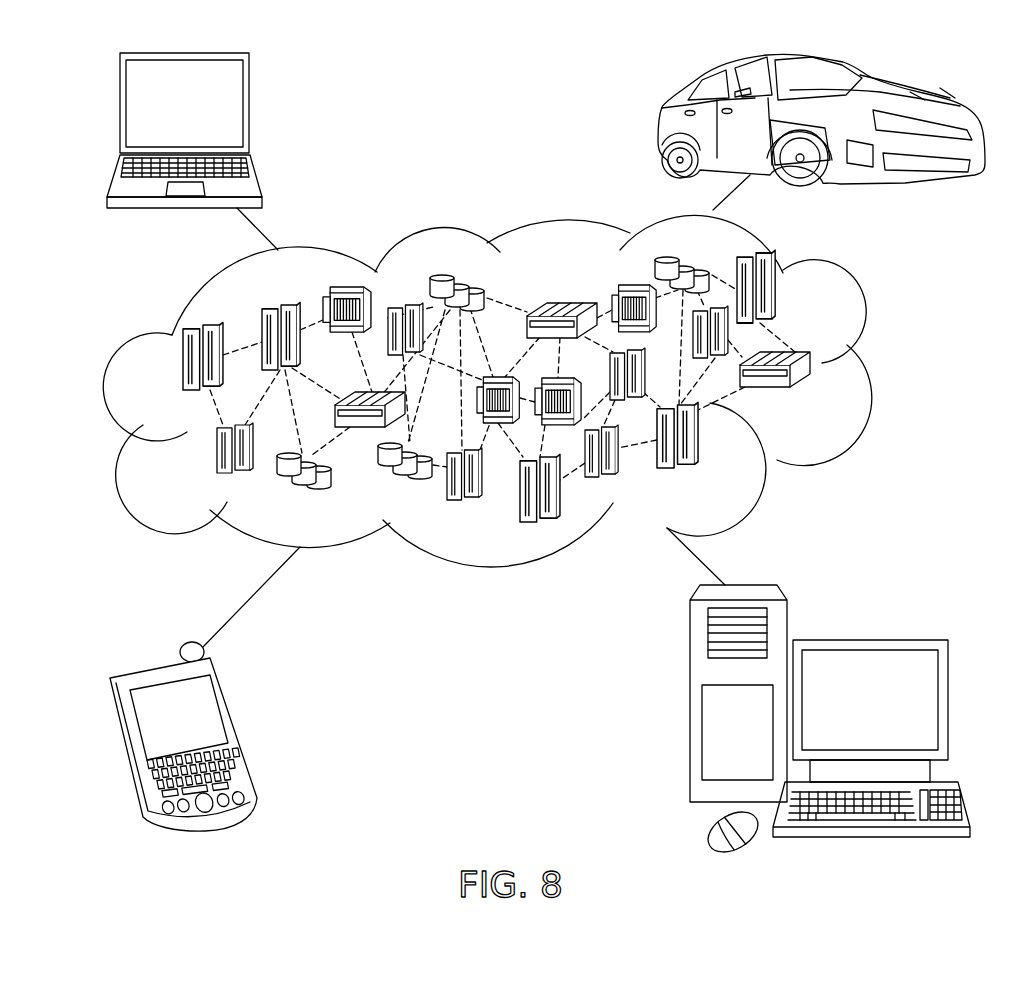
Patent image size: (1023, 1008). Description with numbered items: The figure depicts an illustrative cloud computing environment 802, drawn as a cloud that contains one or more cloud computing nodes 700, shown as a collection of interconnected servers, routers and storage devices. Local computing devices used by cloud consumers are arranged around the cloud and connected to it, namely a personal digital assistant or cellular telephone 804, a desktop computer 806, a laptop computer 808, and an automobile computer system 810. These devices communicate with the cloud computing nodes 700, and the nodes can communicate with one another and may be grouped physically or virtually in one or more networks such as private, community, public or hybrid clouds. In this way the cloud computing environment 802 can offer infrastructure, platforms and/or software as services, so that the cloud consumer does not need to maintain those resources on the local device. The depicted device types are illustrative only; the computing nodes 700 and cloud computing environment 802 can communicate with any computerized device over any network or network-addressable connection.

The cloud computing nodes 700 is at (815, 397).
The cloud computing environment 802 is at (873, 368).
The personal digital assistant (PDA) or cellular telephone 804 is at (237, 725).
The desktop computer 806 is at (867, 640).
The laptop computer 808 is at (249, 108).
The automobile computer system 810 is at (662, 128).